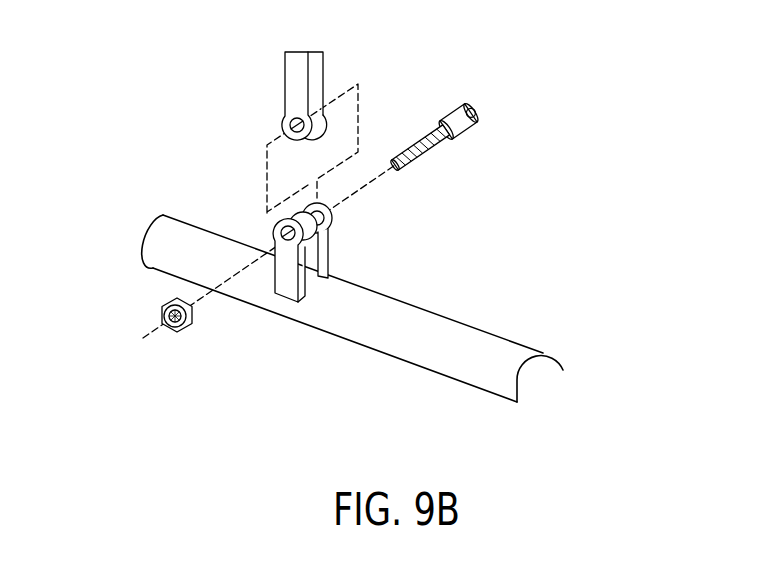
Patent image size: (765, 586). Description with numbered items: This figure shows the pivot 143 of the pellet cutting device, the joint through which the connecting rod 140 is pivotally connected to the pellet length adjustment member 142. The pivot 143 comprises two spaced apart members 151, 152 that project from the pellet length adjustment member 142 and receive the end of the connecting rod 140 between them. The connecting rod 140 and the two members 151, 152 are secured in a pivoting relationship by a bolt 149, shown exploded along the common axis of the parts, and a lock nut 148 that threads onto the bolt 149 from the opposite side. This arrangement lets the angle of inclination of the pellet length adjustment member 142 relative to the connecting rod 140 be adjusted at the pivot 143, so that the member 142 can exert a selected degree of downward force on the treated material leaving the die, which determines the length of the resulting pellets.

The connecting rod 140 is at (324, 60).
The pellet length adjustment member 142 is at (463, 378).
The pivot 143 is at (248, 214).
The lock nut 148 is at (160, 311).
The bolt 149 is at (447, 140).
The spaced apart member 151 is at (287, 290).
The spaced apart member 152 is at (328, 246).